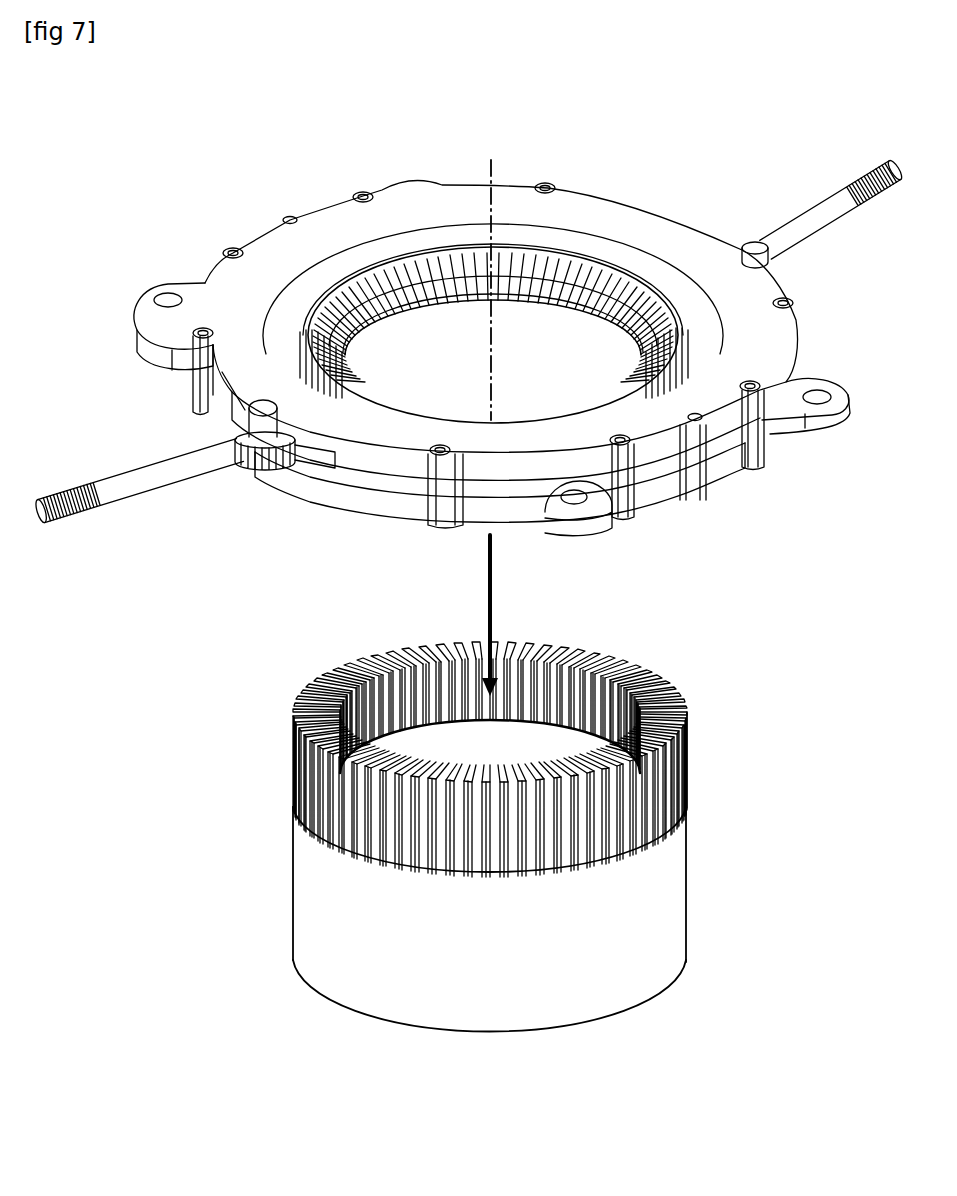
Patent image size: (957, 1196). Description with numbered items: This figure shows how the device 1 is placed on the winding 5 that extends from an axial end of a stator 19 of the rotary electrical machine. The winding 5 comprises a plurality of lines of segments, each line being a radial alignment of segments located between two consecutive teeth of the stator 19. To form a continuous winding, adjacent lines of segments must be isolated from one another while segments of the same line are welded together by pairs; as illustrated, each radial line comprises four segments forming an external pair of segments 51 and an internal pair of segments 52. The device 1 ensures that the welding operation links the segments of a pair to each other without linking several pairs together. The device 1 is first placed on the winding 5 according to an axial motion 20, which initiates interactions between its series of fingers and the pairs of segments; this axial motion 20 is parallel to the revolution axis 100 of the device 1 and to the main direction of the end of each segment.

The device 1 is at (469, 309).
The revolution axis 100 is at (493, 352).
The axial motion 20 is at (487, 605).
The winding 5 is at (448, 800).
The stator 19 is at (698, 877).
The external pair of segments 51 is at (680, 702).
The internal pair of segments 52 is at (659, 702).